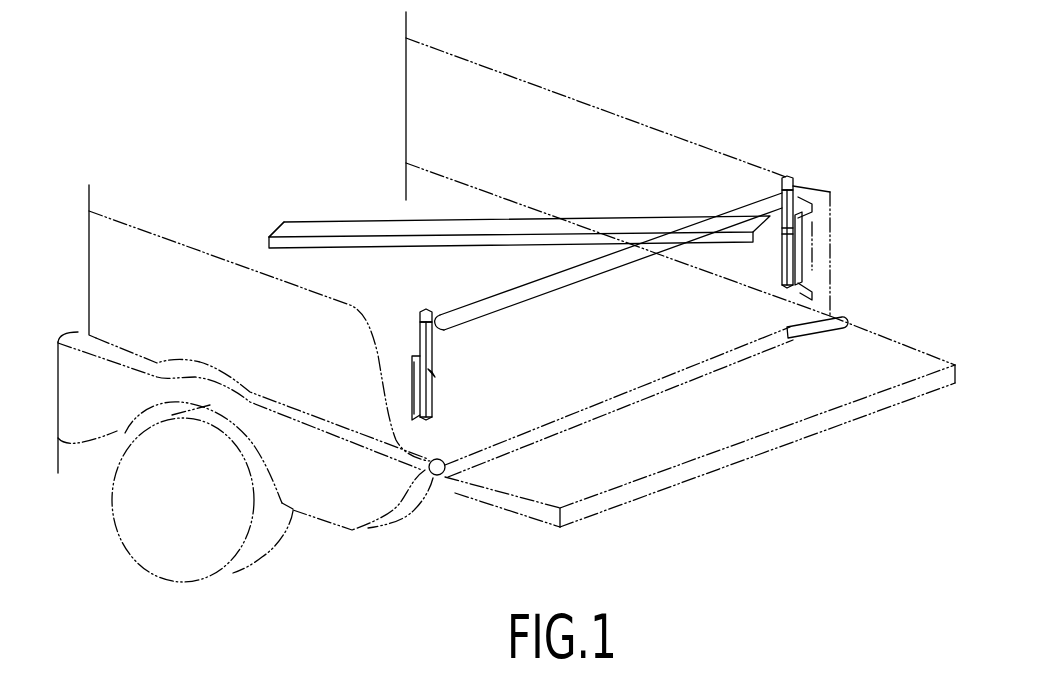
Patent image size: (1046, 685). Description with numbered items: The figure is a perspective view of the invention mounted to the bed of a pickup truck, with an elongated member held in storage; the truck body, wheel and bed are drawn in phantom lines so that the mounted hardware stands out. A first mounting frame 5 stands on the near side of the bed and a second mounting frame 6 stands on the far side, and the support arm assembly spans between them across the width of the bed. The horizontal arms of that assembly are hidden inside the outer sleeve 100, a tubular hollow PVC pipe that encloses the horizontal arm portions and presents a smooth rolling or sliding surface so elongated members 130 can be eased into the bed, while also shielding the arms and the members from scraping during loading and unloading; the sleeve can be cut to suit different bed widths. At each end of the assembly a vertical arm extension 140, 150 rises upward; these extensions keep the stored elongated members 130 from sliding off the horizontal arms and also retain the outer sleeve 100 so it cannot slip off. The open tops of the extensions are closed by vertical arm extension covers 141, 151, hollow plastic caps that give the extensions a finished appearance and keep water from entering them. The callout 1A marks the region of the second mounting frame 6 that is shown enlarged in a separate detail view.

The outer sleeve 100 is at (733, 210).
The elongated members 130 is at (480, 226).
The vertical arm extension 140 is at (420, 312).
The vertical arm extension cover 141 is at (428, 310).
The vertical arm extension 150 is at (794, 196).
The vertical arm extension cover 151 is at (788, 176).
The first mounting frame 5 is at (452, 390).
The second mounting frame 6 is at (766, 283).
The detail view callout 1A is at (773, 246).